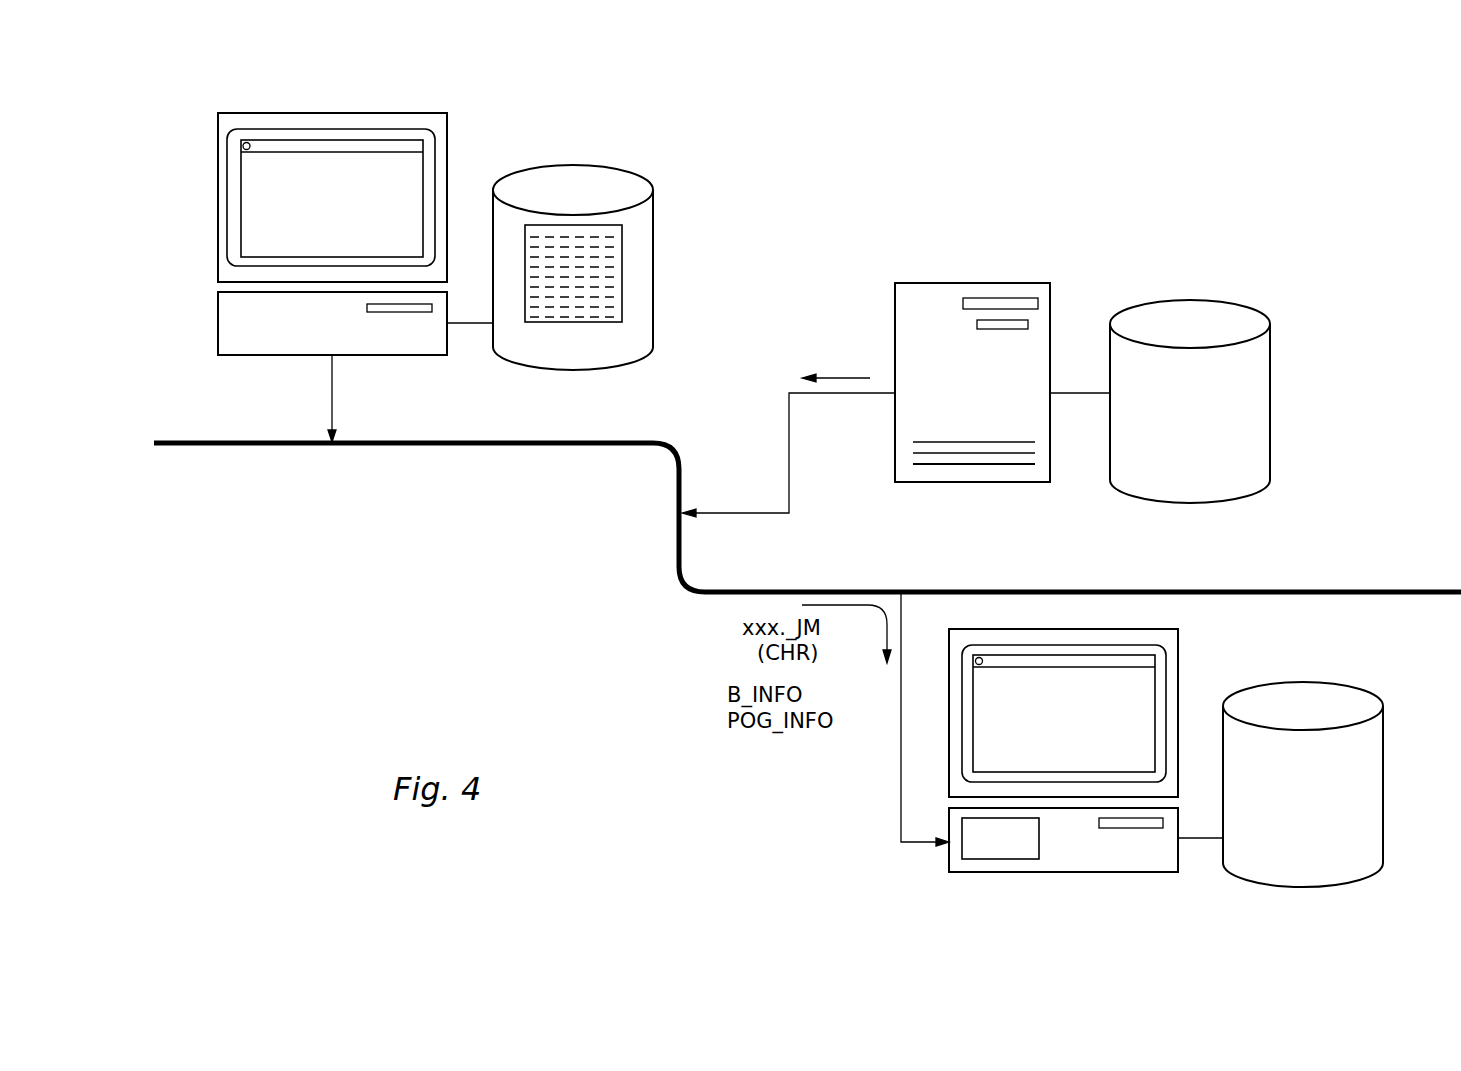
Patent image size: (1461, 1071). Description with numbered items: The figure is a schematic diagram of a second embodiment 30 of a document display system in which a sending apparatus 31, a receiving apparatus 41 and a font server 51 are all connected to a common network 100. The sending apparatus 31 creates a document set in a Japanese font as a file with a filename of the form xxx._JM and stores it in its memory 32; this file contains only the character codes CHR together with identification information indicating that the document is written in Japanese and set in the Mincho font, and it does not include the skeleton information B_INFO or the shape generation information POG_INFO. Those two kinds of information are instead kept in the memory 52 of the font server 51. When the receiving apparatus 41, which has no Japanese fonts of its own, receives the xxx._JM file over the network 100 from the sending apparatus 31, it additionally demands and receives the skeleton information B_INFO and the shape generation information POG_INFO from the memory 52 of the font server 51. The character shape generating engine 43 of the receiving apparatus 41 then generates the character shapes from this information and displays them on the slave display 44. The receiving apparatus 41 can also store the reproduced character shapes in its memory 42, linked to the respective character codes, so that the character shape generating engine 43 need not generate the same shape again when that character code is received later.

The second embodiment of document display system 30 is at (882, 533).
The sending apparatus 31 is at (225, 96).
The memory 32 is at (655, 252).
The receiving apparatus 41 is at (1066, 747).
The memory 42 is at (1385, 766).
The character shape generating engine 43 is at (950, 868).
The slave display 44 is at (1153, 722).
The font server 51 is at (1063, 282).
The memory 52 is at (1272, 384).
The network 100 is at (677, 548).